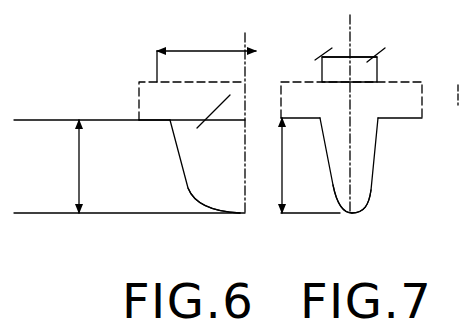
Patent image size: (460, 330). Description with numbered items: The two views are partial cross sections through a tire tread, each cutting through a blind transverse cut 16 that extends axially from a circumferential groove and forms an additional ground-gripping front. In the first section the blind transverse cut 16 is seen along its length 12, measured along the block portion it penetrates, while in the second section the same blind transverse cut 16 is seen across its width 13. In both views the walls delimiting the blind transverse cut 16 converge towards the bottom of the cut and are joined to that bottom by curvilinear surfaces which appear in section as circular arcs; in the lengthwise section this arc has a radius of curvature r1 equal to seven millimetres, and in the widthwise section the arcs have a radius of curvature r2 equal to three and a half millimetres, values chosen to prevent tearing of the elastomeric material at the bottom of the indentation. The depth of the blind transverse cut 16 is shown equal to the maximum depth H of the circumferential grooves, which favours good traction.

In FIG. 6, the blind transverse cut 16 is at (243, 82).
In FIG. 7, the blind transverse cut 16 is at (378, 82).
In FIG. 6, the length l2 of the blind transverse cut 12 is at (186, 16).
In FIG. 7, the width l3 of the blind transverse cut 13 is at (327, 16).
In FIG. 6, the maximum depth of the circumferential grooves H is at (91, 166).
In FIG. 7, the maximum depth of the circumferential grooves H is at (294, 165).
In FIG. 6, the radius of curvature r1 is at (223, 213).
In FIG. 7, the radius of curvature r2 is at (340, 213).